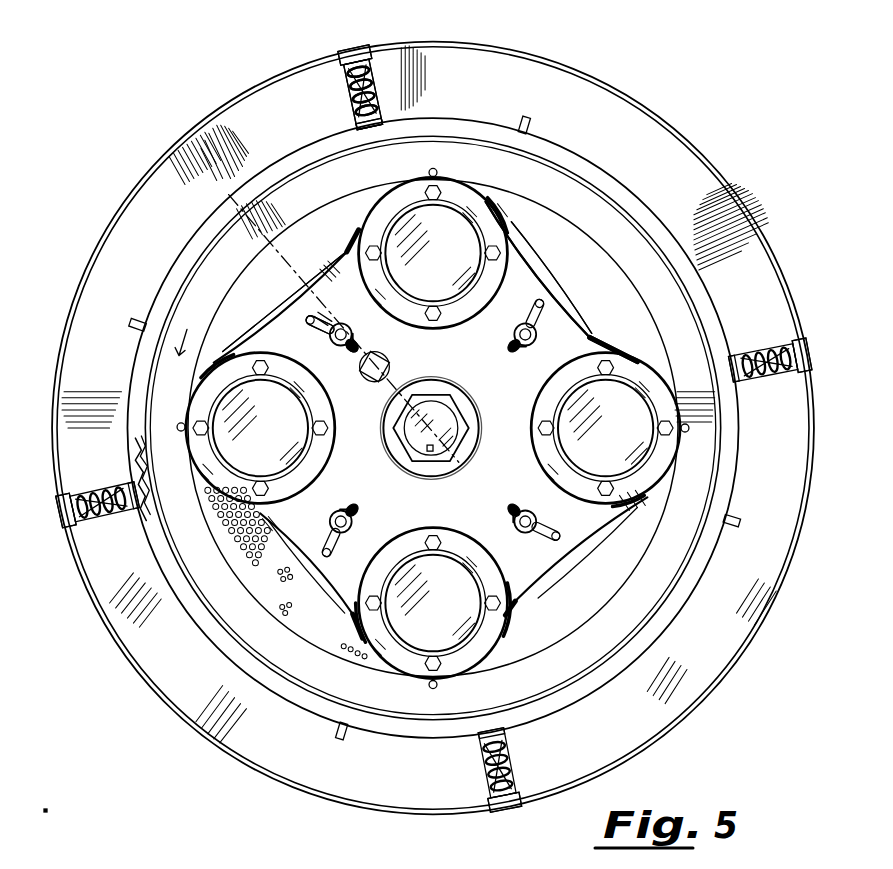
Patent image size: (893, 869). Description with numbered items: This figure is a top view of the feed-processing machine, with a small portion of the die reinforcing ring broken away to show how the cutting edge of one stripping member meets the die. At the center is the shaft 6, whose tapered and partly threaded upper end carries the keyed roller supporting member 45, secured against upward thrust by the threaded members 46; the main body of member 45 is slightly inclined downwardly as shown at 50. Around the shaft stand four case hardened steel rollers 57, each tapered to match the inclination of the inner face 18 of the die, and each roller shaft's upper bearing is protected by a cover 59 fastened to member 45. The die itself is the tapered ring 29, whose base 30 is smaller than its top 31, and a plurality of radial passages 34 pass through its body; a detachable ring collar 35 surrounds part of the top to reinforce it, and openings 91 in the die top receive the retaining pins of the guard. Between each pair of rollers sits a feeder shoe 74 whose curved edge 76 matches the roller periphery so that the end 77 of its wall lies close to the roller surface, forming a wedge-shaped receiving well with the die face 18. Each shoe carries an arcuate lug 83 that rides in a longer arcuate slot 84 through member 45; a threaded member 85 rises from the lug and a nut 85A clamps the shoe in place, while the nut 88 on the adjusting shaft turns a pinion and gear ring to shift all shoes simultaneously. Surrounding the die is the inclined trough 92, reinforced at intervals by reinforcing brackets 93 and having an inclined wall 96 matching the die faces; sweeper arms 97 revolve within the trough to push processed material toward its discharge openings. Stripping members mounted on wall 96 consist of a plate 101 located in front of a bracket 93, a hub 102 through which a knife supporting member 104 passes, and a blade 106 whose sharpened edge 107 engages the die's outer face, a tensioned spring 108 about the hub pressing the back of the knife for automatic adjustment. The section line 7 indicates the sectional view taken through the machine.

The shaft 6 is at (452, 421).
The section line 7- 7 is at (215, 182).
The inner face 18 is at (309, 623).
The ring 29 is at (205, 579).
The base 30 is at (236, 536).
The top 31 is at (264, 580).
The passages 34 is at (250, 561).
The ring collar 35 is at (171, 265).
The roller supporting member 45 is at (528, 278).
The threaded members 46 is at (466, 434).
The inclined body portion 50 is at (590, 337).
The roller 57 is at (472, 186).
The cover 59 is at (425, 313).
The feeder shoe 74 is at (306, 284).
The edge 76 is at (520, 236).
The end of wall 77 is at (506, 200).
The arcuate lug 83 is at (338, 322).
The arcuate slots 84 is at (322, 318).
The threaded member 85 is at (338, 342).
The nut 85A is at (352, 350).
The nut 88 is at (373, 383).
The openings 91 is at (177, 426).
The trough 92 is at (126, 205).
The reinforcing brackets 93 is at (352, 44).
The inclined wall 96 is at (98, 253).
The sweeper arms 97 is at (530, 118).
The plate 101 is at (383, 48).
The hub 102 is at (342, 91).
The knife supporting member 104 is at (381, 109).
The blade 106 is at (128, 466).
The sharpened edge 107 is at (136, 452).
The tensioned spring 108 is at (352, 100).